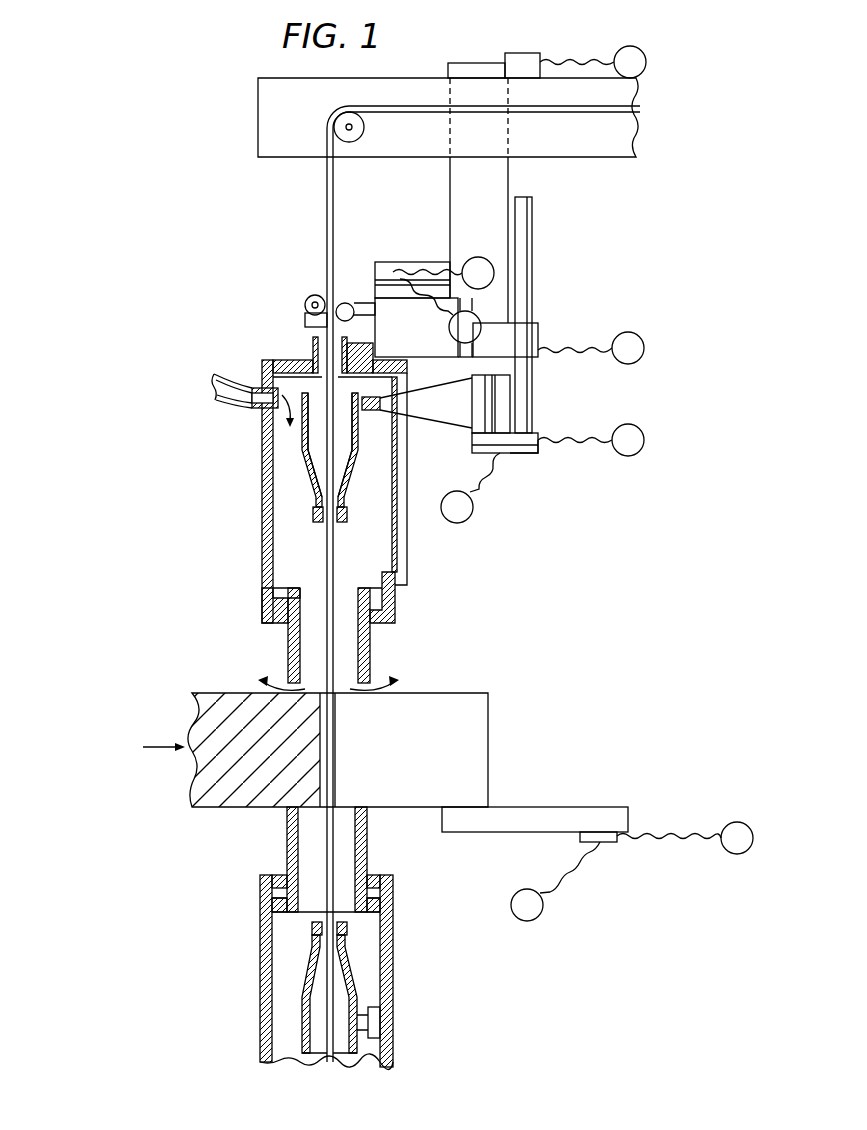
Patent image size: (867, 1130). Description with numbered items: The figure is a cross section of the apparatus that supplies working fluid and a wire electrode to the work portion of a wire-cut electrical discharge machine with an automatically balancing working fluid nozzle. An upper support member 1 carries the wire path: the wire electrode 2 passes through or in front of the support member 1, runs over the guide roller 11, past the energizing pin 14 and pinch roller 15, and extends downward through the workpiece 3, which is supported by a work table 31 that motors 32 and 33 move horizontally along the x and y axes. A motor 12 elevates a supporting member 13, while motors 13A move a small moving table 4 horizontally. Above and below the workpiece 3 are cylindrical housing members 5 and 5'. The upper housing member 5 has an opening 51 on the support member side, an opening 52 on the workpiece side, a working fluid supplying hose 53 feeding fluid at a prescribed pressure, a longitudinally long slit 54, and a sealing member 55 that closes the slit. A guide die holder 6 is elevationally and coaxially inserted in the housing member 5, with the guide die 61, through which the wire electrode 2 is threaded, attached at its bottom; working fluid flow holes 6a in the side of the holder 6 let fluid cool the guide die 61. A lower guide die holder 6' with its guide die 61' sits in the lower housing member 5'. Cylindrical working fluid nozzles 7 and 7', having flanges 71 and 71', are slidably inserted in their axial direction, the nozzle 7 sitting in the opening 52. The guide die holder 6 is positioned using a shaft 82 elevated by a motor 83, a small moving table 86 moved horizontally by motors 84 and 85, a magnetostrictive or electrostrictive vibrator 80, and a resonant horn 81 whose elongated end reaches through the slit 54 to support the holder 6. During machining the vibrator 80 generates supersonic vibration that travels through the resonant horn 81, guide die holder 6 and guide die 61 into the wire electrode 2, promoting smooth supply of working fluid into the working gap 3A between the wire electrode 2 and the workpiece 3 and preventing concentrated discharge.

The upper support member 1 is at (303, 158).
The wire electrode 2 is at (326, 256).
The workpiece 3 is at (487, 713).
The working gap 3A is at (334, 745).
The small moving table 4 is at (430, 347).
The cylindrical housing member 5 is at (307, 491).
The cylindrical housing member 5' is at (303, 972).
The guide die holder 6 is at (343, 450).
The guide die holder 6' is at (367, 993).
The working fluid flow holes 6a is at (302, 437).
The cylindrical working fluid nozzle 7 is at (361, 635).
The cylindrical working fluid nozzle 7' is at (297, 859).
The guide roller 11 is at (352, 142).
The motor 12 is at (646, 62).
The supporting member 13 is at (450, 220).
The motors 13A is at (495, 272).
The energizing pin 14 is at (348, 303).
The pinch roller 15 is at (312, 297).
The work table 31 is at (600, 812).
The motor 32 is at (527, 921).
The motor 33 is at (737, 854).
The opening 51 is at (313, 345).
The opening 52 is at (300, 620).
The working fluid supplying hose 53 is at (238, 383).
The longitudinally long slit 54 is at (405, 568).
The sealing member 55 is at (400, 540).
The guide die 61 is at (285, 541).
The guide die 61' is at (380, 913).
The flange 71 is at (361, 560).
The flange 71' is at (292, 908).
The vibrator 80 is at (505, 393).
The resonant horn 81 is at (458, 412).
The shaft 82 is at (533, 222).
The motor 83 is at (645, 348).
The motor 84 is at (472, 513).
The motor 85 is at (645, 440).
The small moving table 86 is at (538, 459).